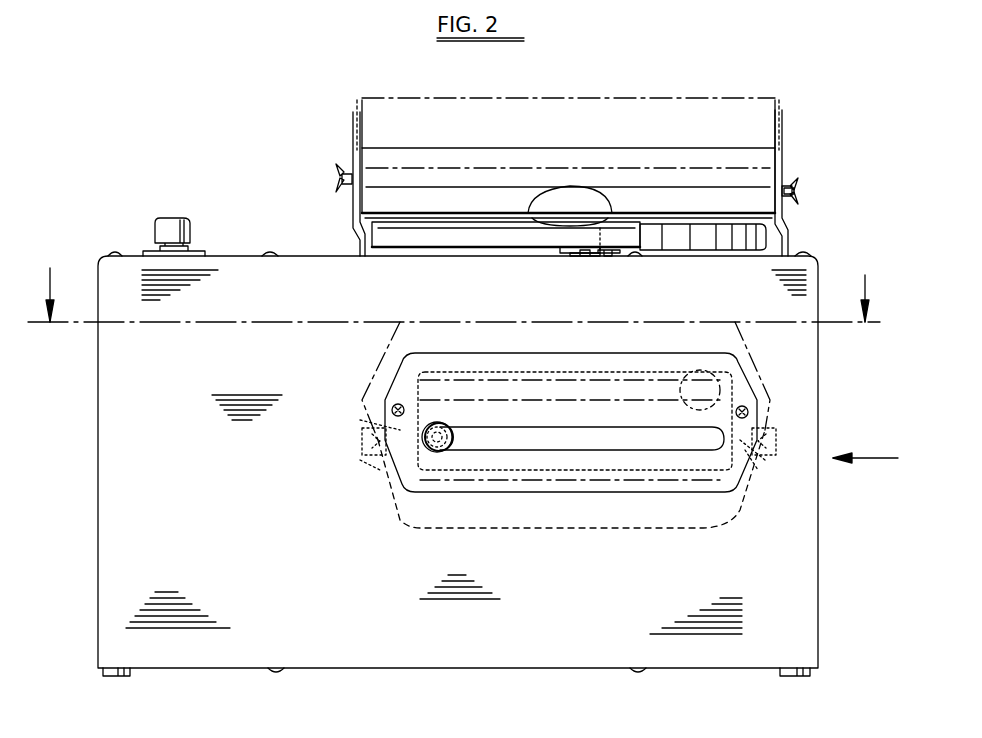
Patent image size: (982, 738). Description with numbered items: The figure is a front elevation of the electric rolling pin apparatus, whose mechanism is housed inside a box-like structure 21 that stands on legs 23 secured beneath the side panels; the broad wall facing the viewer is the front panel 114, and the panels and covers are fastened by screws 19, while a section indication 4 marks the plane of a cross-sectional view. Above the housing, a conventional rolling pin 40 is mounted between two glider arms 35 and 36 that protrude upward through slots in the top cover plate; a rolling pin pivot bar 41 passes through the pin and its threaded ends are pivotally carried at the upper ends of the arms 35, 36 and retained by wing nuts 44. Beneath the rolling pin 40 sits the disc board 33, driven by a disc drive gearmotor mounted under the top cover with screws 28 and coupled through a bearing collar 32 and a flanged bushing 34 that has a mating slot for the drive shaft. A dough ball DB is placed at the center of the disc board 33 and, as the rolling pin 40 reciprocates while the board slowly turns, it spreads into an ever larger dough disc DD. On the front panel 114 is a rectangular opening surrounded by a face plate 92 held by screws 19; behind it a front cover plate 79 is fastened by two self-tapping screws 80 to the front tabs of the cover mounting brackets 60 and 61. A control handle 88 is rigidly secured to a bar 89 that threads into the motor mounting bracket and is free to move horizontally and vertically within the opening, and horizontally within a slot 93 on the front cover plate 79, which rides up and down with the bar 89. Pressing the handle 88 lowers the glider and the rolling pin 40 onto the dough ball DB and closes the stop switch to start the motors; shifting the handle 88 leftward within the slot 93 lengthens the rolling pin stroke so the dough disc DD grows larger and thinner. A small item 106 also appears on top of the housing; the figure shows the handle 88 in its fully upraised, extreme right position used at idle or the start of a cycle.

The front panel 114 is at (98, 449).
The section line 4 is at (456, 294).
The box-like structure 21 is at (866, 447).
The legs 23 is at (110, 676).
The knob 106 is at (170, 220).
The screws 19 is at (115, 252).
The glider arm 35 is at (352, 160).
The glider arm 36 is at (783, 170).
The wing nuts 44 is at (340, 178).
The rolling pin pivot bar 41 is at (796, 184).
The rolling pin 40 is at (540, 96).
The dough ball DB is at (573, 180).
The dough disc DD is at (420, 225).
The disc board 33 is at (395, 240).
The screws 28 is at (604, 256).
The flanged bushing 34 is at (558, 252).
The bearing collar 32 is at (570, 256).
The front cover plate 79 is at (690, 306).
The face plate 92 is at (450, 358).
The control handle 88 is at (445, 428).
The slot 93 is at (530, 430).
The bar 89 is at (455, 438).
The self-tapping screws 80 is at (362, 440).
The cover mounting bracket 60 is at (366, 452).
The cover mounting bracket 61 is at (752, 456).